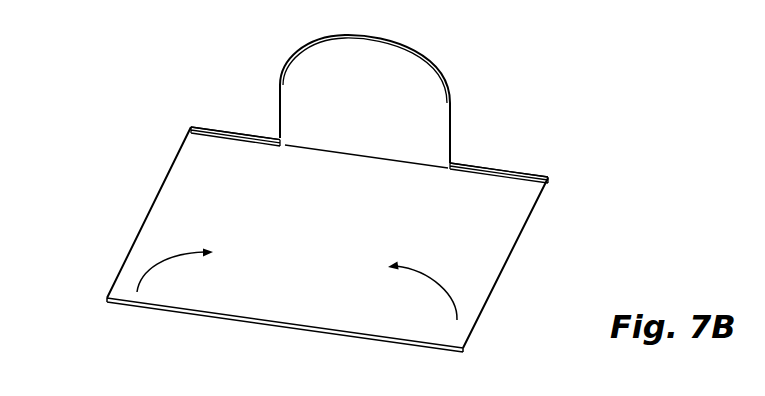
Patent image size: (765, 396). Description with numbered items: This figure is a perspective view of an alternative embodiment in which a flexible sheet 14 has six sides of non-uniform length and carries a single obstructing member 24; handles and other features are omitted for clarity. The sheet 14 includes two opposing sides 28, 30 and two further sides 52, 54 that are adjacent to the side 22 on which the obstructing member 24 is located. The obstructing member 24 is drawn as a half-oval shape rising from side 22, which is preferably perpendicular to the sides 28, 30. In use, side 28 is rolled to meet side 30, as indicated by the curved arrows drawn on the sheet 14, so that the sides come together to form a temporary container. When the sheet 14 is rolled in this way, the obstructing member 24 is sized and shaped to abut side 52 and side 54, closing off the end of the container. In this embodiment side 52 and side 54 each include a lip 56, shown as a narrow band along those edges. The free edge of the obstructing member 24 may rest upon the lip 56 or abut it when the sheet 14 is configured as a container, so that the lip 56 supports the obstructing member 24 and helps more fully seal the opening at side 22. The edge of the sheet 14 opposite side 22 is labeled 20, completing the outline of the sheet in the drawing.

The sheet 14 is at (362, 318).
The bottom edge 20 is at (300, 334).
The side 22 is at (243, 128).
The obstructing member 24 is at (360, 62).
The side 28 is at (108, 248).
The side 30 is at (530, 243).
The side 52 is at (226, 104).
The side 54 is at (486, 149).
The lip 56 is at (212, 128).